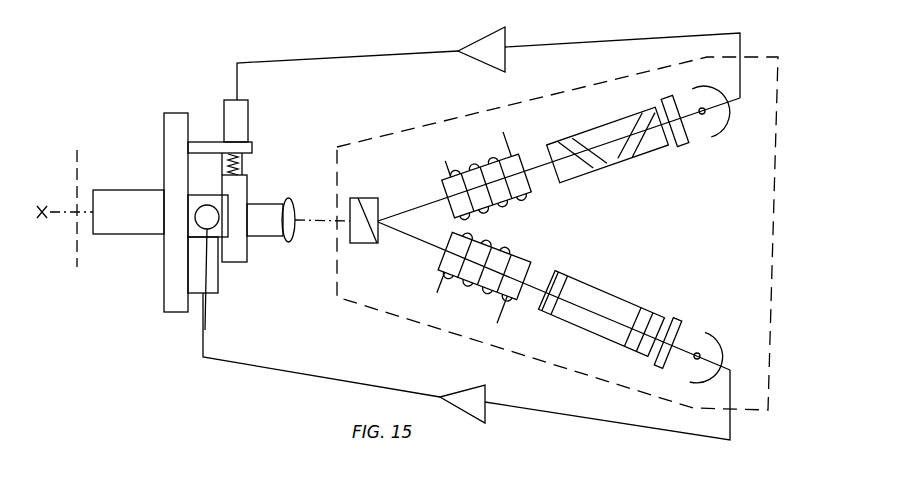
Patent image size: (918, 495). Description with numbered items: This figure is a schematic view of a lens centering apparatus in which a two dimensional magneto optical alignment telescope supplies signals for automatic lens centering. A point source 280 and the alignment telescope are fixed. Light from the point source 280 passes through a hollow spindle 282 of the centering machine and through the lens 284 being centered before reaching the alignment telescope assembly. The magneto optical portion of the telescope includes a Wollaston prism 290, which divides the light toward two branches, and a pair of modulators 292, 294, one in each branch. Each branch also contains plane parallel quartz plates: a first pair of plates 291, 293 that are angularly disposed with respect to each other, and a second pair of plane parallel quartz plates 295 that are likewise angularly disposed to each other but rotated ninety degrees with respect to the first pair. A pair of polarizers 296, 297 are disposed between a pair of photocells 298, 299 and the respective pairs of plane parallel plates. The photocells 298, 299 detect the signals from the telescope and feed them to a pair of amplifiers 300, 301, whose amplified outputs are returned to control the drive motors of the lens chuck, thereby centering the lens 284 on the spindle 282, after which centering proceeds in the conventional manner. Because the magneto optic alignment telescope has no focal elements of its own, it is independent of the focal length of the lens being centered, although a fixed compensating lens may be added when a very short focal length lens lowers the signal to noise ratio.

The point source 280 is at (40, 216).
The hollow spindle 282 is at (260, 236).
The lens 284 is at (287, 198).
The Wollaston prism 290 is at (358, 198).
The plane parallel quartz plate 291 is at (558, 142).
The modulator 292 is at (492, 242).
The plane parallel quartz plate 293 is at (637, 118).
The modulator 294 is at (470, 172).
The second pair of plane parallel quartz plates 295 is at (648, 310).
The polarizer 296 is at (673, 145).
The polarizer 297 is at (678, 318).
The photocell 298 is at (705, 332).
The photocell 299 is at (711, 137).
The amplifier 300 is at (505, 32).
The amplifier 301 is at (485, 390).